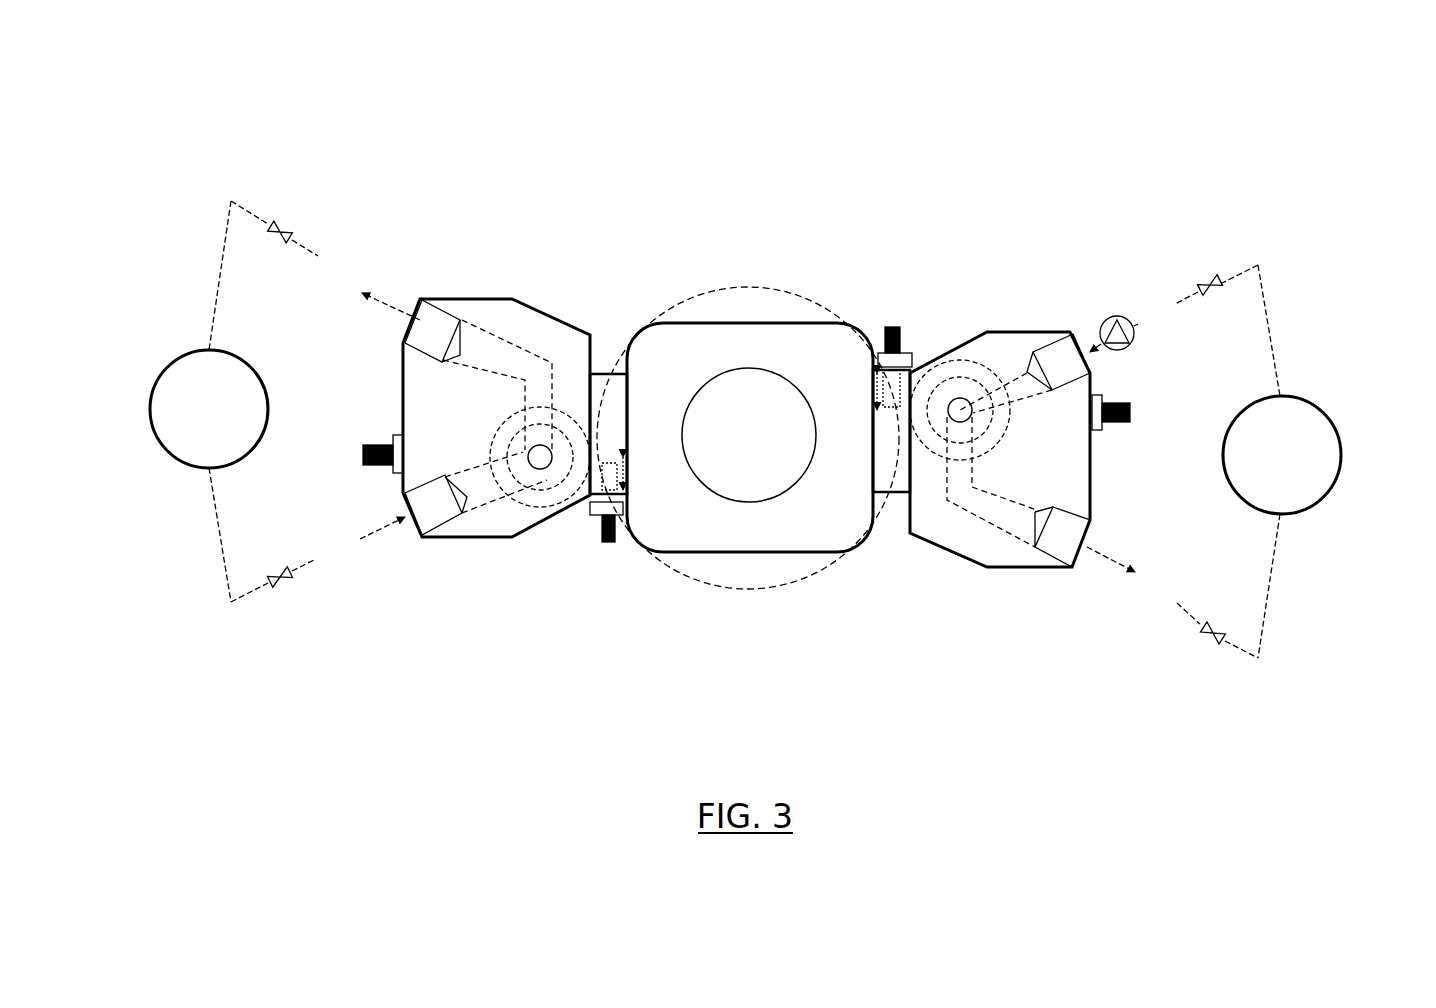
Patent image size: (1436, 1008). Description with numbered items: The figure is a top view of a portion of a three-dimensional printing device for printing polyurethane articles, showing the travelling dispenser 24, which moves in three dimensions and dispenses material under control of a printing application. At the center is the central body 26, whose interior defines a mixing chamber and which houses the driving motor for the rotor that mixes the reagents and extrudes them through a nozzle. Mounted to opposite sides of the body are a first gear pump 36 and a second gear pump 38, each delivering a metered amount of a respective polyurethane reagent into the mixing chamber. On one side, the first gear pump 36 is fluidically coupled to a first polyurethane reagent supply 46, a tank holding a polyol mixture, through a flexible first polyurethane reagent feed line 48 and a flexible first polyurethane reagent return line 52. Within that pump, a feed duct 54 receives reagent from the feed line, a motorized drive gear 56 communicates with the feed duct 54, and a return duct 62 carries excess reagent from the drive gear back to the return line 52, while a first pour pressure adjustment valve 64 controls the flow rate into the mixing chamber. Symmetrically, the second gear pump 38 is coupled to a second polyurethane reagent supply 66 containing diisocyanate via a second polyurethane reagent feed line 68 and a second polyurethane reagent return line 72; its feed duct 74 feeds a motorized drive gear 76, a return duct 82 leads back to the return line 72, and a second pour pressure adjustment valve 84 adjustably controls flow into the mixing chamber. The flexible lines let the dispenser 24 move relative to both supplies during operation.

The travelling dispenser 24 is at (950, 130).
The central body 26 is at (738, 297).
The first gear pump 36 is at (555, 322).
The second gear pump 38 is at (1020, 330).
The first polyurethane reagent supply 46 is at (150, 407).
The first polyurethane reagent feed line 48 is at (317, 563).
The first polyurethane reagent return line 52 is at (315, 254).
The feed duct 54 is at (487, 498).
The motorized drive gear 56 is at (552, 497).
The return duct 62 is at (498, 328).
The first pour pressure adjustment valve 64 is at (617, 540).
The second polyurethane reagent supply 66 is at (1340, 458).
The second polyurethane reagent feed line 68 is at (1185, 302).
The second polyurethane reagent return line 72 is at (1187, 613).
The feed duct 74 is at (1008, 370).
The motorized drive gear 76 is at (952, 362).
The return duct 82 is at (975, 527).
The second pour pressure adjustment valve 84 is at (883, 328).